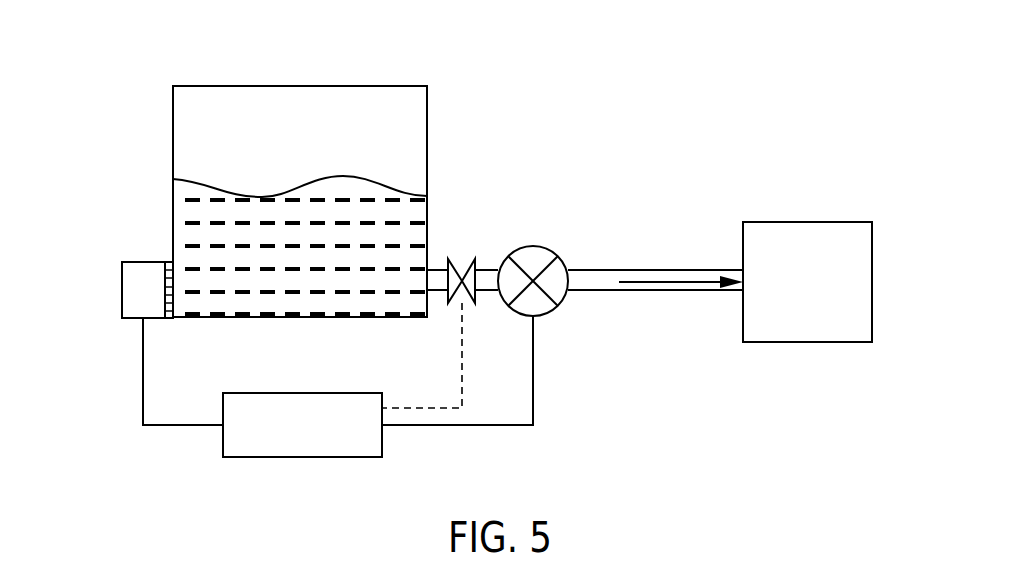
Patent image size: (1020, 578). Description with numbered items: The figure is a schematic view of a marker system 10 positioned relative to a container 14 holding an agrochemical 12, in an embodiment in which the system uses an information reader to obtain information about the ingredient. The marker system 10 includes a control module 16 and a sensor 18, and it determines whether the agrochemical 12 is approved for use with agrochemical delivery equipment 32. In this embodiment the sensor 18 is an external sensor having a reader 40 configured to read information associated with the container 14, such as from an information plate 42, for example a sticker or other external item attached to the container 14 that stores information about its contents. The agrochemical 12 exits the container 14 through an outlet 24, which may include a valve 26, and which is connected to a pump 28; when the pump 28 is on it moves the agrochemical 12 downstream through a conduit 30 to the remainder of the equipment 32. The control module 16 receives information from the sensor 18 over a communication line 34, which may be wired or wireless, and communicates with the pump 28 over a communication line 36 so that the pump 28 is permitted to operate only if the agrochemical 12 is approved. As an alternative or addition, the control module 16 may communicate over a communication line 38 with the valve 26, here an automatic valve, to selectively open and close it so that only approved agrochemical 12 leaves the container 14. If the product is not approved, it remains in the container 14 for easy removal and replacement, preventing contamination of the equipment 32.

The marker system 10 is at (120, 100).
The agrochemical 12 is at (187, 192).
The container 14 is at (427, 114).
The control module 16 is at (382, 432).
The sensor 18 is at (122, 296).
The outlet 24 is at (438, 270).
The valve 26 is at (453, 303).
The pump 28 is at (533, 245).
The conduit 30 is at (487, 270).
The agrochemical delivery equipment 32 is at (797, 342).
The communication line 34 is at (143, 403).
The communication line 36 is at (535, 403).
The communication line 38 is at (463, 360).
The reader 40 is at (168, 262).
The information plate 42 is at (172, 318).